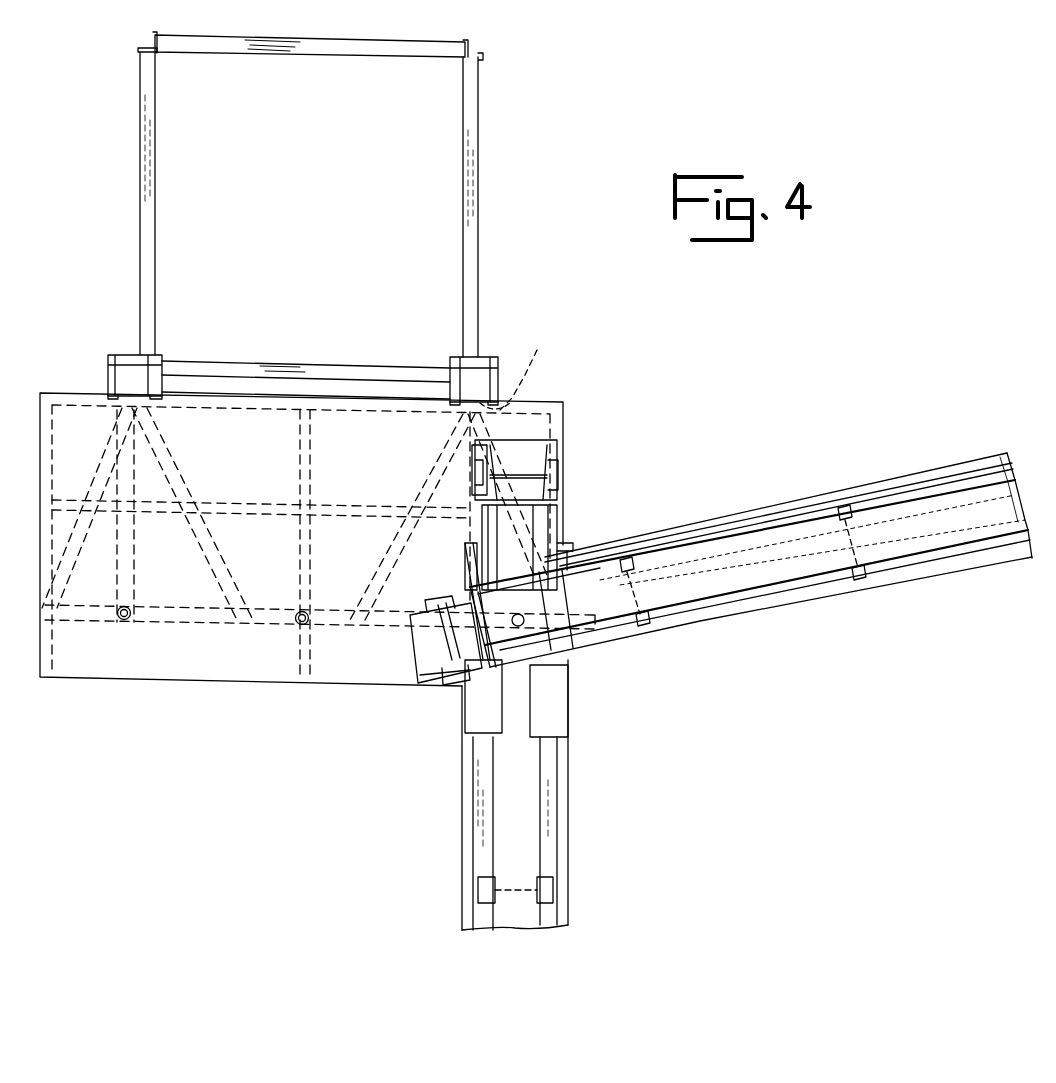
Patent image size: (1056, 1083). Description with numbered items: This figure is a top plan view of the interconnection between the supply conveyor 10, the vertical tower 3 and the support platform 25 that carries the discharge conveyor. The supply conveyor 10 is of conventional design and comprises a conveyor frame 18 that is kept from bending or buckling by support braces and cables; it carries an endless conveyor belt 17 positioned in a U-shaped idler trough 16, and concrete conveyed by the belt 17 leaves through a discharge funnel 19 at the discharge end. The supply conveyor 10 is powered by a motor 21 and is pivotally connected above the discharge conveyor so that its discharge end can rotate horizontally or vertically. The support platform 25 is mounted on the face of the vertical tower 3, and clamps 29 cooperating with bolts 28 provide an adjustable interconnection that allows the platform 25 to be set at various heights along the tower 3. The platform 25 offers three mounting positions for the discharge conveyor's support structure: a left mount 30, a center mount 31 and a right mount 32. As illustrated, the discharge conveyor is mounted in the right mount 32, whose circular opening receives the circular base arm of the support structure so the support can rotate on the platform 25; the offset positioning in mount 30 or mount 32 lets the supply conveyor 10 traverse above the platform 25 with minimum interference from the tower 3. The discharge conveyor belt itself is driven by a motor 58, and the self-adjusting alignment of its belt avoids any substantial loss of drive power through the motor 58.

The vertical tower 3 is at (471, 122).
The supply conveyor 10 is at (751, 557).
The U-shaped idler trough 16 is at (660, 557).
The endless conveyor belt 17 is at (728, 583).
The conveyor frame 18 is at (962, 568).
The discharge funnel 19 is at (492, 675).
The motor 21 is at (432, 658).
The support platform 25 is at (218, 670).
The bolts 28 is at (450, 363).
The clamps 29 is at (482, 363).
The left mount 30 is at (126, 620).
The center mount 31 is at (306, 612).
The right mount 32 is at (512, 617).
The motor 58 is at (538, 453).